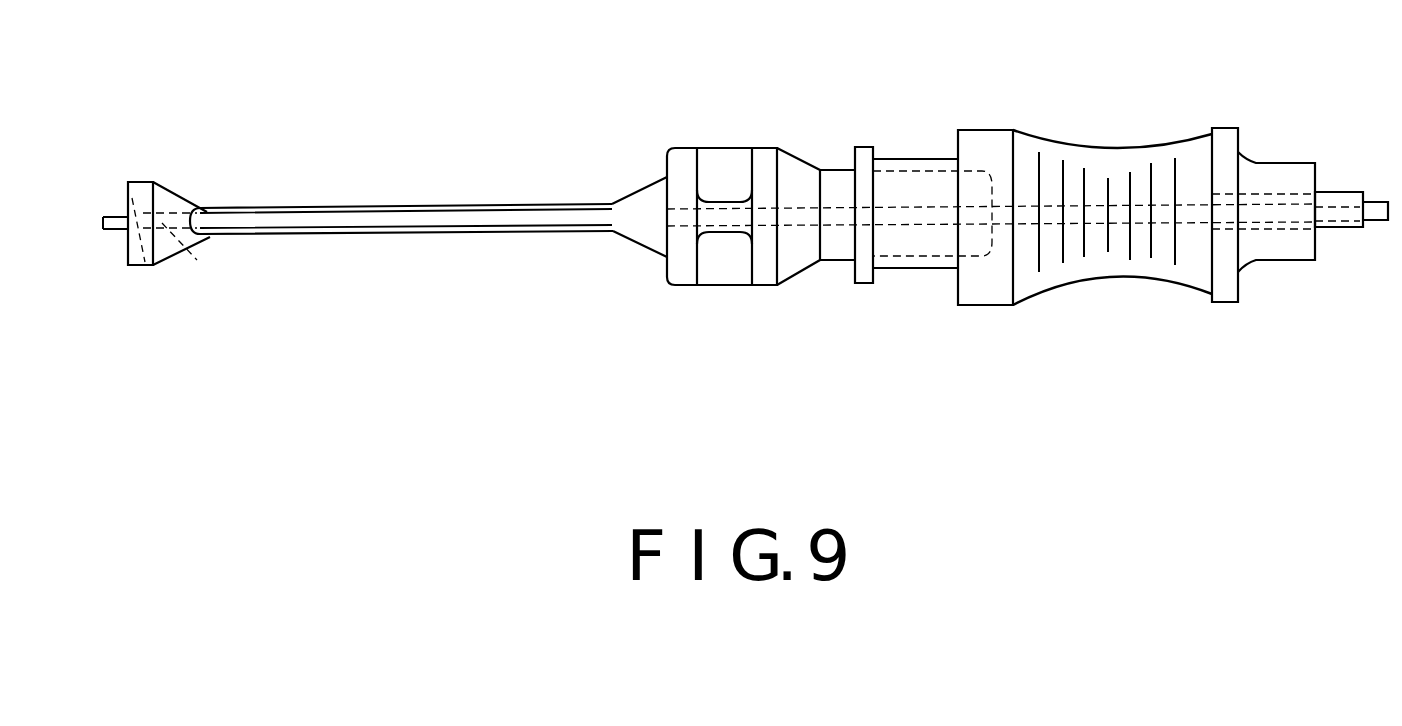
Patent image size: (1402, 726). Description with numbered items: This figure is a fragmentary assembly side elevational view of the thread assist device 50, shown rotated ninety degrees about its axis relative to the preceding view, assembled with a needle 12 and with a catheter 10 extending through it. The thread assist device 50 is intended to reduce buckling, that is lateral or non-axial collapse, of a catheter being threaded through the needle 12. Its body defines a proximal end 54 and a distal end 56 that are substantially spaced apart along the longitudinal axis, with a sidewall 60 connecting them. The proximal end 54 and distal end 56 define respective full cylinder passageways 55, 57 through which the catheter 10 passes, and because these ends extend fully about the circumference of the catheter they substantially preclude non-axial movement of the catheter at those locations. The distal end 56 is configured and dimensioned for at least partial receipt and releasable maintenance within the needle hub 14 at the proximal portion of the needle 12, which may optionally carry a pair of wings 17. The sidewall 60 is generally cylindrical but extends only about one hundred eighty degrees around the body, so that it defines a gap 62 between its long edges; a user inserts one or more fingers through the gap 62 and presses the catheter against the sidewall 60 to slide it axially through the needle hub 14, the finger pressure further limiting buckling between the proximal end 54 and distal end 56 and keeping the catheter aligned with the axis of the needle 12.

The stylet-free epidural catheter 10 is at (97, 221).
The needle 12 is at (1345, 233).
The needle hub 14 is at (990, 130).
The wings 17 is at (1227, 148).
The thread assist device 50 is at (452, 240).
The proximal end 54 is at (140, 262).
The full cylinder passageway 55 is at (168, 228).
The distal end 56 is at (807, 268).
The full cylinder passageway 57 is at (842, 208).
The sidewall 60 is at (373, 242).
The gap 62 is at (650, 174).